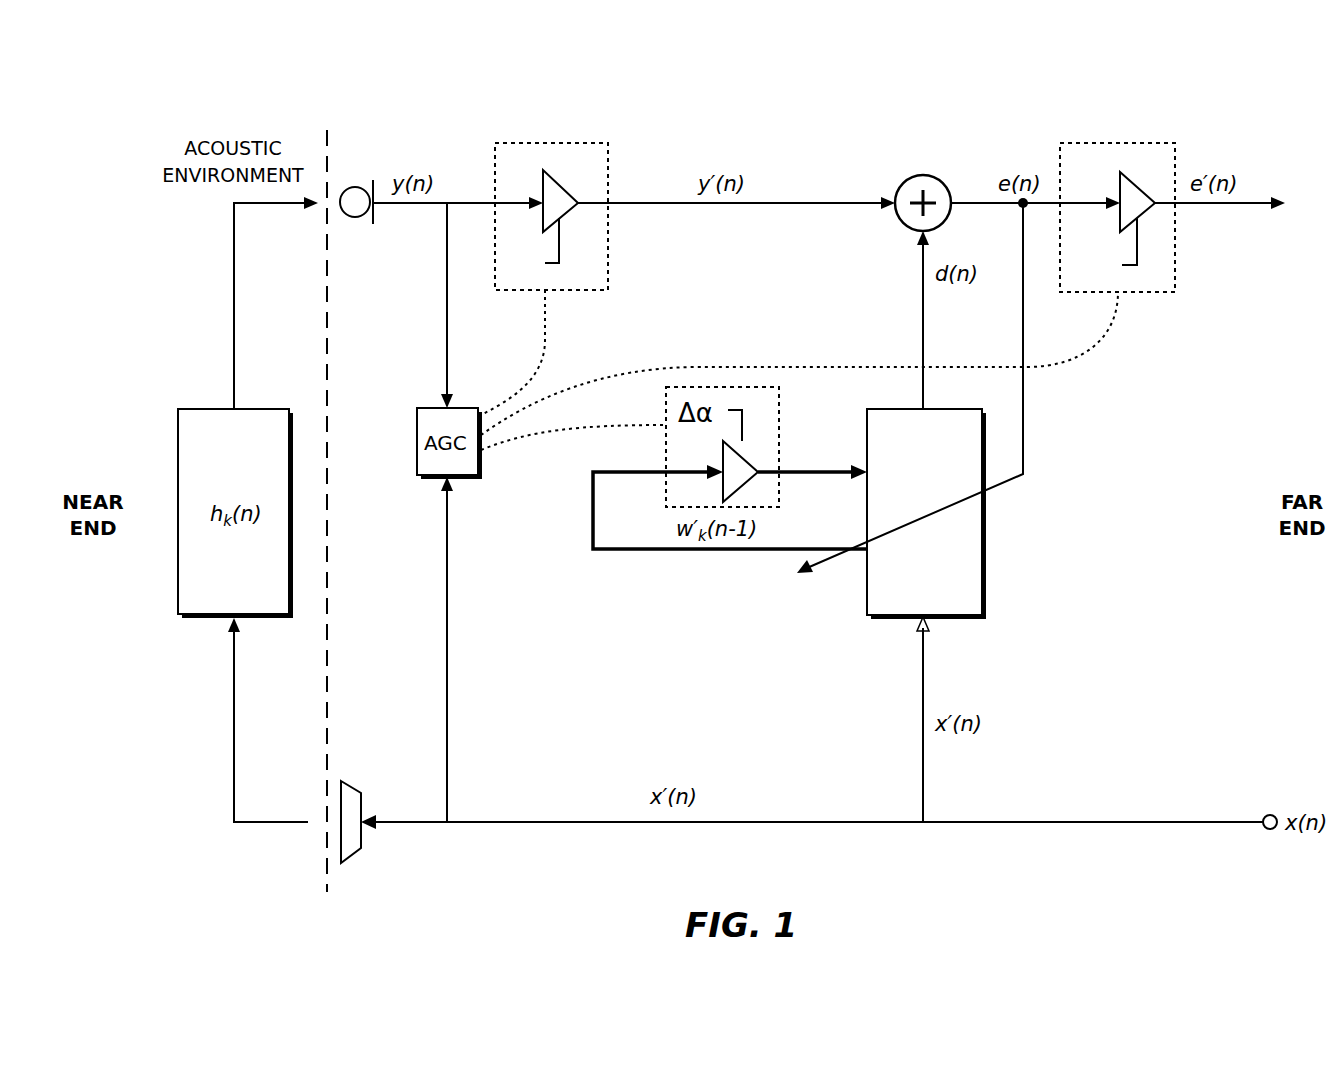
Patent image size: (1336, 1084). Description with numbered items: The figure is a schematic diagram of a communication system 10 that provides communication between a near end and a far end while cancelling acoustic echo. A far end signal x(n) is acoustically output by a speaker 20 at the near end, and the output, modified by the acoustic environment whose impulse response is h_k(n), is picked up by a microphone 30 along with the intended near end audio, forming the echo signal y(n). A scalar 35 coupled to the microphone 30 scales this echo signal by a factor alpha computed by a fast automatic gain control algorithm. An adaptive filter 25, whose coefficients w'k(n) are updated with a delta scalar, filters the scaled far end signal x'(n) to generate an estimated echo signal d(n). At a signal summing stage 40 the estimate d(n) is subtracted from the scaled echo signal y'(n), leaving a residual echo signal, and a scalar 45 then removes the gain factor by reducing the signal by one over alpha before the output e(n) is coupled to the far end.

The communication system 10 is at (1230, 80).
The speaker 20 is at (350, 856).
The adaptive filter 25 is at (986, 562).
The microphone 30 is at (357, 186).
The scalar 35 is at (558, 182).
The signal summing stage 40 is at (925, 174).
The scalar 45 is at (1136, 182).